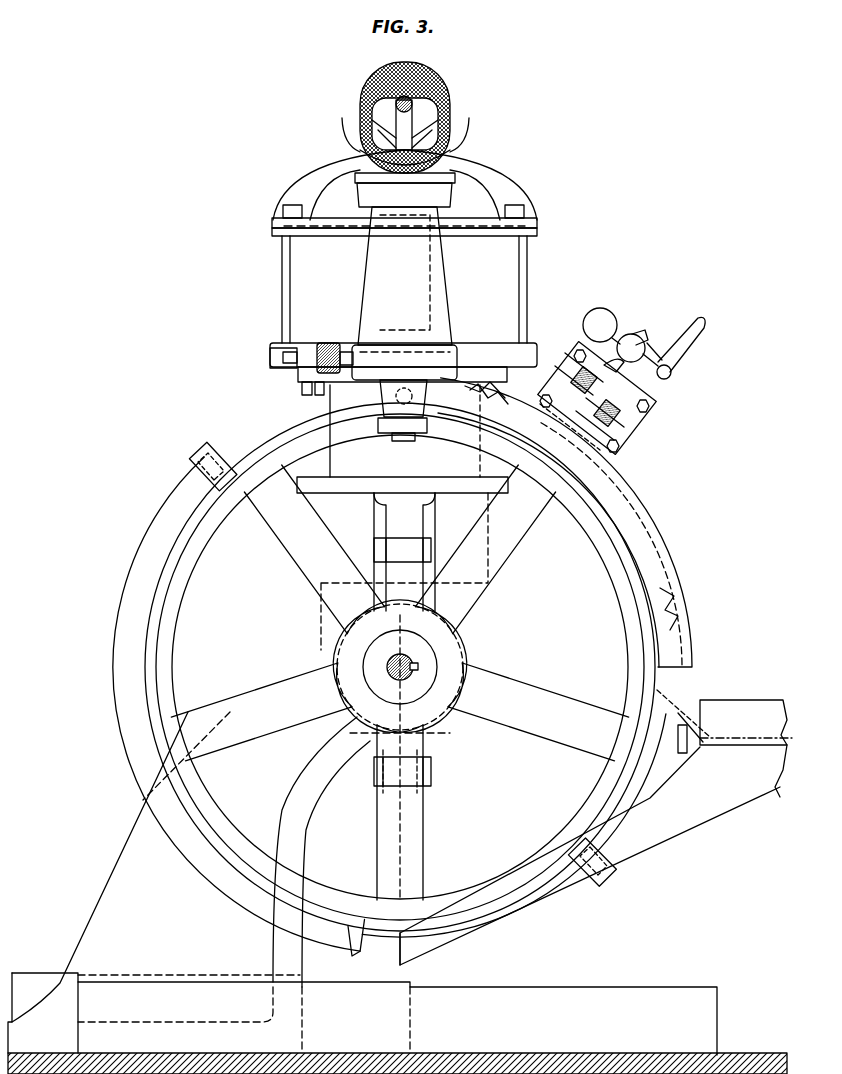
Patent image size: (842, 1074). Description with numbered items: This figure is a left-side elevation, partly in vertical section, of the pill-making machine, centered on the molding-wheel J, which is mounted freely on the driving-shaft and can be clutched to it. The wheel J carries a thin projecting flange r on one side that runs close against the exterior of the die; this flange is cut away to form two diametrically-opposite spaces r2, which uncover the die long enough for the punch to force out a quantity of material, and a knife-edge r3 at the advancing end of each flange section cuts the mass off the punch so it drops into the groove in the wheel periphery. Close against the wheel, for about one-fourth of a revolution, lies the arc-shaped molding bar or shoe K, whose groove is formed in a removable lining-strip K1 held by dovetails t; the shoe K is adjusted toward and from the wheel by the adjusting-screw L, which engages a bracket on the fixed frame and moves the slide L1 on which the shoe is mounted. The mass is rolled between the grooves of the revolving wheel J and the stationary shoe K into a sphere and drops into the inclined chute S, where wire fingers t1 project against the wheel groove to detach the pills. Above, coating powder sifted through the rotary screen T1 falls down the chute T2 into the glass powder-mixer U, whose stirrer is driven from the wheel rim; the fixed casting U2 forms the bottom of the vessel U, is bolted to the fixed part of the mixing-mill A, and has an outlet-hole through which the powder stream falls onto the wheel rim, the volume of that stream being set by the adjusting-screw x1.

The rotary screen T1 is at (403, 117).
The chute T2 is at (391, 135).
The mixing-mill A is at (403, 272).
The powder-mixer U is at (405, 259).
The fixed casting U2 is at (404, 393).
The adjusting-screw x1 is at (311, 345).
The molding-wheel J is at (397, 729).
The flange r is at (385, 679).
The spaces r2 is at (392, 662).
The knife-edge r3 is at (232, 447).
The molding bar or shoe K is at (567, 522).
The lining-strip K1 is at (570, 445).
The dovetails t is at (506, 400).
The fingers t1 is at (681, 721).
The inclined chute S is at (596, 832).
The adjusting-screw L is at (644, 343).
The slide L1 is at (628, 425).